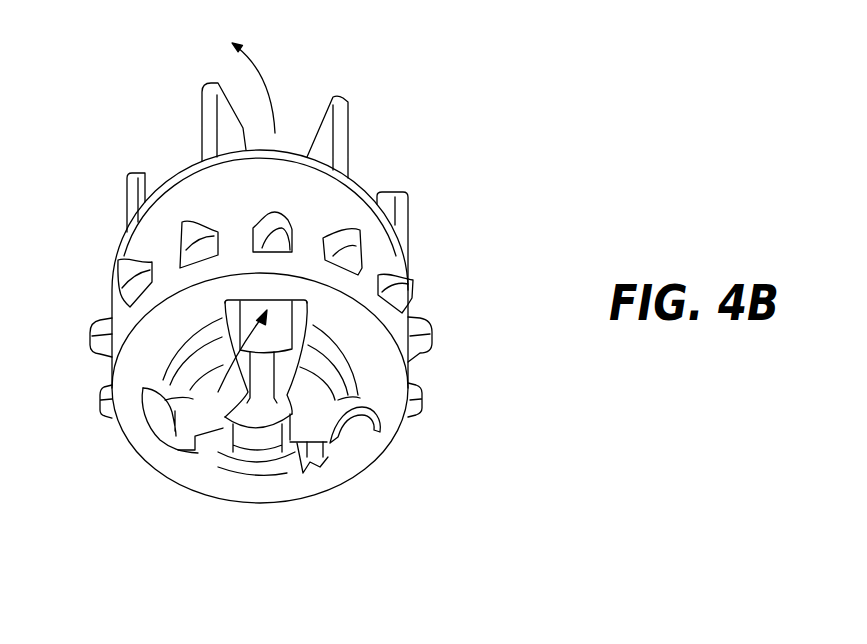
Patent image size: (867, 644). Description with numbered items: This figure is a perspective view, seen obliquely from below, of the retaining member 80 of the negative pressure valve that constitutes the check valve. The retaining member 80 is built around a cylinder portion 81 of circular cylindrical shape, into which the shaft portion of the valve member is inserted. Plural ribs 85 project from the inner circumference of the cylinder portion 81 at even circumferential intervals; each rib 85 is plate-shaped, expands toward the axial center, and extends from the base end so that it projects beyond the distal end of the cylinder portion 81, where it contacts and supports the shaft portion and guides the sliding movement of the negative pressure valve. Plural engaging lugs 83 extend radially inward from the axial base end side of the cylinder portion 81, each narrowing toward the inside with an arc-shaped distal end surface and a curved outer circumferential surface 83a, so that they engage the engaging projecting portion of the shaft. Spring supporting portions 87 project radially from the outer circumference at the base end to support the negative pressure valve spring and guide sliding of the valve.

The retaining member 80 is at (438, 194).
The cylinder portion 81 is at (133, 240).
The engaging lug 83 is at (190, 450).
The outer circumferential surface 83a is at (193, 399).
The rib 85 is at (198, 105).
The spring supporting portion 87 is at (276, 213).